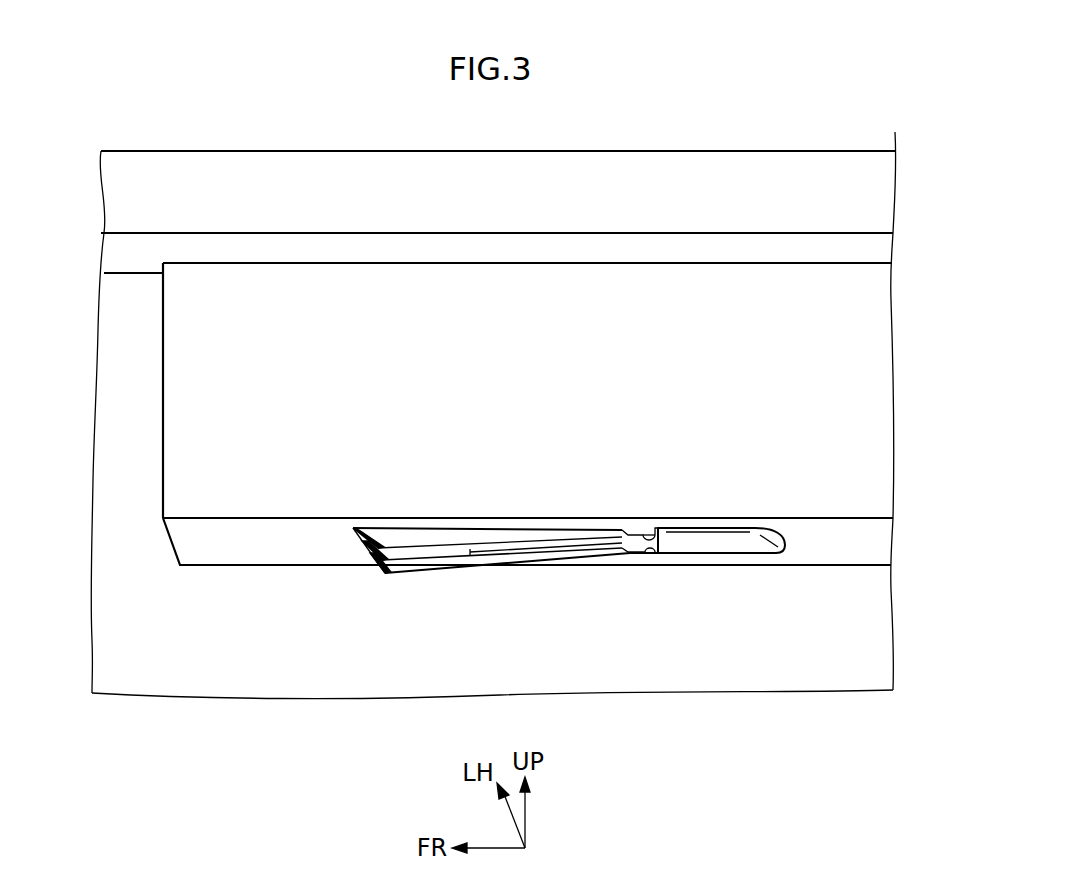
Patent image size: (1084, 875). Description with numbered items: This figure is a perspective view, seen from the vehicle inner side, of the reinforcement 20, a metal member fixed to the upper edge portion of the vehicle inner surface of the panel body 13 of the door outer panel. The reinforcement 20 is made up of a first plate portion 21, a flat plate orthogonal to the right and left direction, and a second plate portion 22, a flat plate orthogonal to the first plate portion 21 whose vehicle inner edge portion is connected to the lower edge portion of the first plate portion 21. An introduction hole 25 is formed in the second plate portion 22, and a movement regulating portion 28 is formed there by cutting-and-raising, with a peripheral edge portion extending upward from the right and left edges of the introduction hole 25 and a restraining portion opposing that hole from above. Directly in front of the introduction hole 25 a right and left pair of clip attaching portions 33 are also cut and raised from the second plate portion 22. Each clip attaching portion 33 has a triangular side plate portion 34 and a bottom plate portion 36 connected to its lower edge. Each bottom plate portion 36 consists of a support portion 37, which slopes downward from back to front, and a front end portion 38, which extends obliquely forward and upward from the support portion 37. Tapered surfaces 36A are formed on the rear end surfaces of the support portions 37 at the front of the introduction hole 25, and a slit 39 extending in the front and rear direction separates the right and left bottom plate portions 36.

The panel body 13 is at (353, 165).
The reinforcement 20 is at (170, 409).
The first plate portion 21 is at (853, 311).
The second plate portion 22 is at (866, 548).
The introduction hole 25 is at (643, 533).
The movement regulating portion 28 is at (748, 543).
The clip attaching portion 33 is at (405, 548).
The side plate portion 34 is at (427, 535).
The bottom plate portion 36 is at (560, 540).
The tapered surface 36A is at (636, 533).
The support portion 37 is at (508, 543).
The front end portion 38 is at (358, 545).
The slit 39 is at (467, 563).